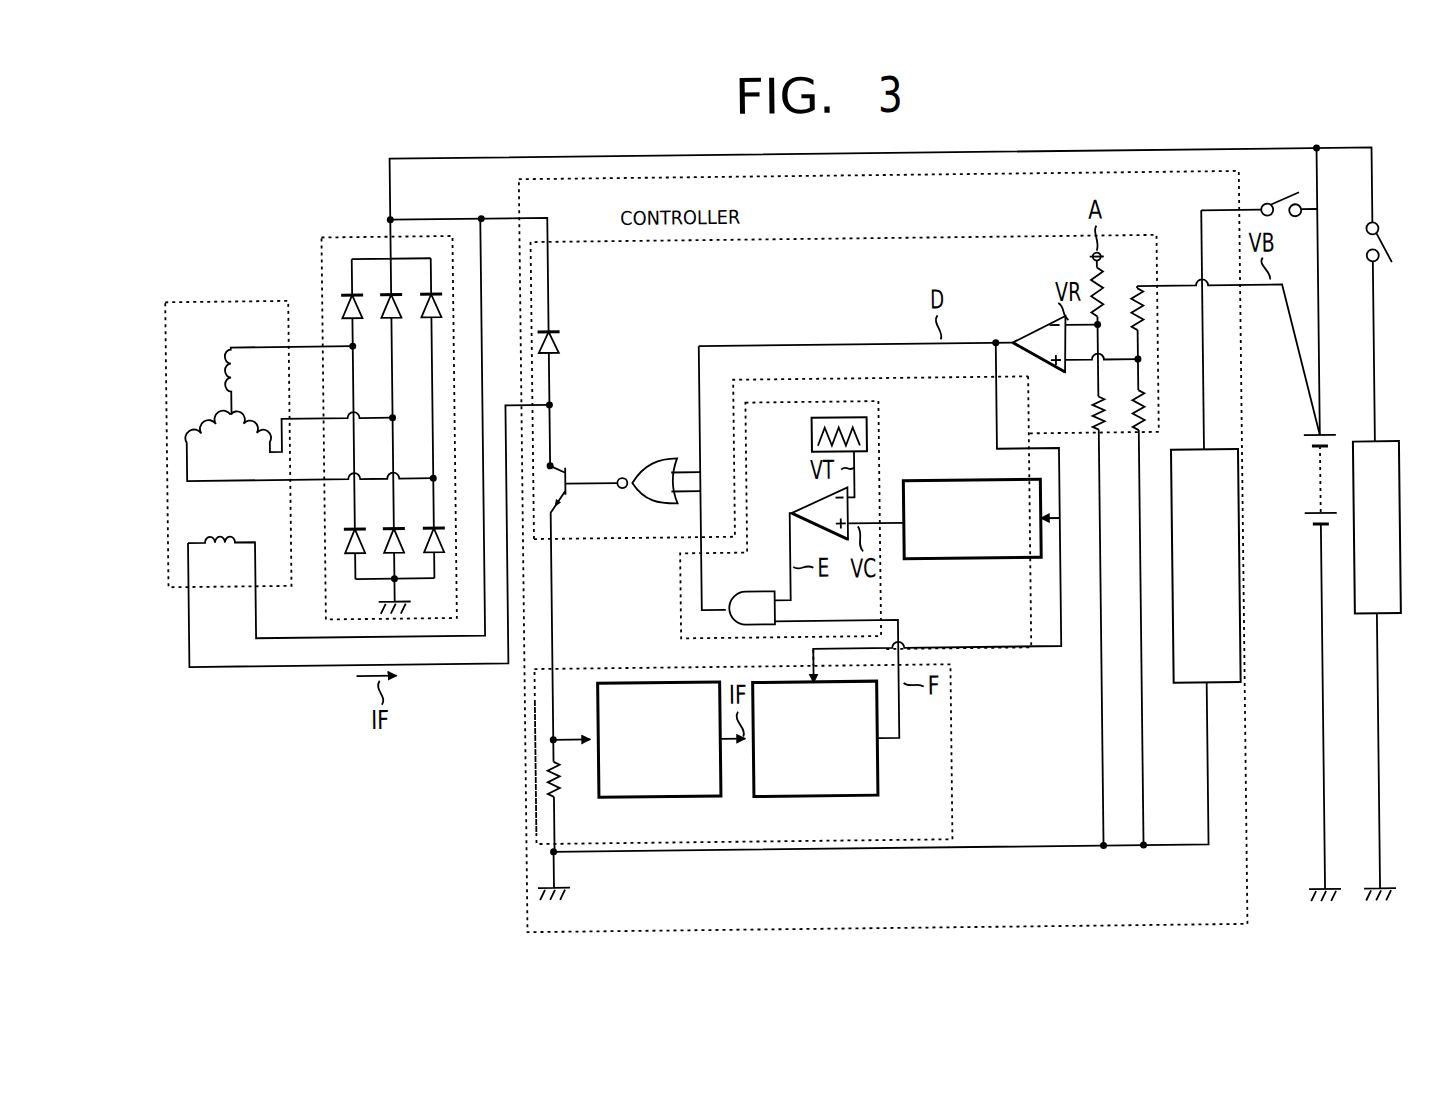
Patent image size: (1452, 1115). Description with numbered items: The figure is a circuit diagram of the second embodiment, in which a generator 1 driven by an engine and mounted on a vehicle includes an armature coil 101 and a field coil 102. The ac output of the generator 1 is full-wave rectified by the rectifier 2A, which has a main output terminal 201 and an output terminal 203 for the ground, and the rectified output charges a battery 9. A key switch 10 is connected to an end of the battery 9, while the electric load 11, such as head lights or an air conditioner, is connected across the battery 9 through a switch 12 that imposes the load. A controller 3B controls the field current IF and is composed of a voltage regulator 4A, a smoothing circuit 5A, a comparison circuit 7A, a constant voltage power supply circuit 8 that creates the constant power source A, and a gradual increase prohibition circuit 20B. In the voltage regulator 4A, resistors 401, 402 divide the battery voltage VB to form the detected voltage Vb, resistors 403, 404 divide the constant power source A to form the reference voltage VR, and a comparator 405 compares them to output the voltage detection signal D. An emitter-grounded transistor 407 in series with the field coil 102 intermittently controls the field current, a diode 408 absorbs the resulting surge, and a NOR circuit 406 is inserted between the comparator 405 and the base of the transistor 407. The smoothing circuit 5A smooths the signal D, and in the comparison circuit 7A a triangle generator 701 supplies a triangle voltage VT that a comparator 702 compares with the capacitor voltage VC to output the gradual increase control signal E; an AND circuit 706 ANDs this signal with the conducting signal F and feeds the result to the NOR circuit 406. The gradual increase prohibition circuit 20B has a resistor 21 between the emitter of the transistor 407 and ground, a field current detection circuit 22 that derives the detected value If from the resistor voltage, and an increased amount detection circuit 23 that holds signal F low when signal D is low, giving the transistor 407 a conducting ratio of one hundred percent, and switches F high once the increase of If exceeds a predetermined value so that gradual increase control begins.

The generator 1 is at (231, 290).
The armature coil 101 is at (212, 391).
The field coil 102 is at (227, 530).
The rectifier 2A is at (348, 232).
The output terminal 201 is at (394, 254).
The output terminal 203 is at (396, 574).
The voltage regulator 4A is at (895, 233).
The diode 408 is at (557, 340).
The transistor 407 is at (569, 455).
The NOR circuit 406 is at (664, 456).
The comparison circuit 7A is at (880, 401).
The triangle generator 701 is at (812, 436).
The comparator 702 is at (810, 502).
The AND circuit 706 is at (760, 590).
The smoothing circuit 5A is at (964, 481).
The comparator 405 is at (1022, 336).
The resistor 403 is at (1093, 290).
The resistor 404 is at (1102, 398).
The resistor 401 is at (1141, 291).
The resistor 402 is at (1144, 404).
The constant voltage power supply circuit 8 is at (1228, 452).
The key switch 10 is at (1284, 197).
The battery 9 is at (1331, 437).
The switch 12 is at (1368, 254).
The electric load 11 is at (1400, 562).
The gradual increase prohibition circuit 20B is at (950, 794).
The controller 3B is at (532, 766).
The resistor 21 is at (546, 787).
The field current detection circuit 22 is at (593, 693).
The increased amount detection circuit 23 is at (882, 778).